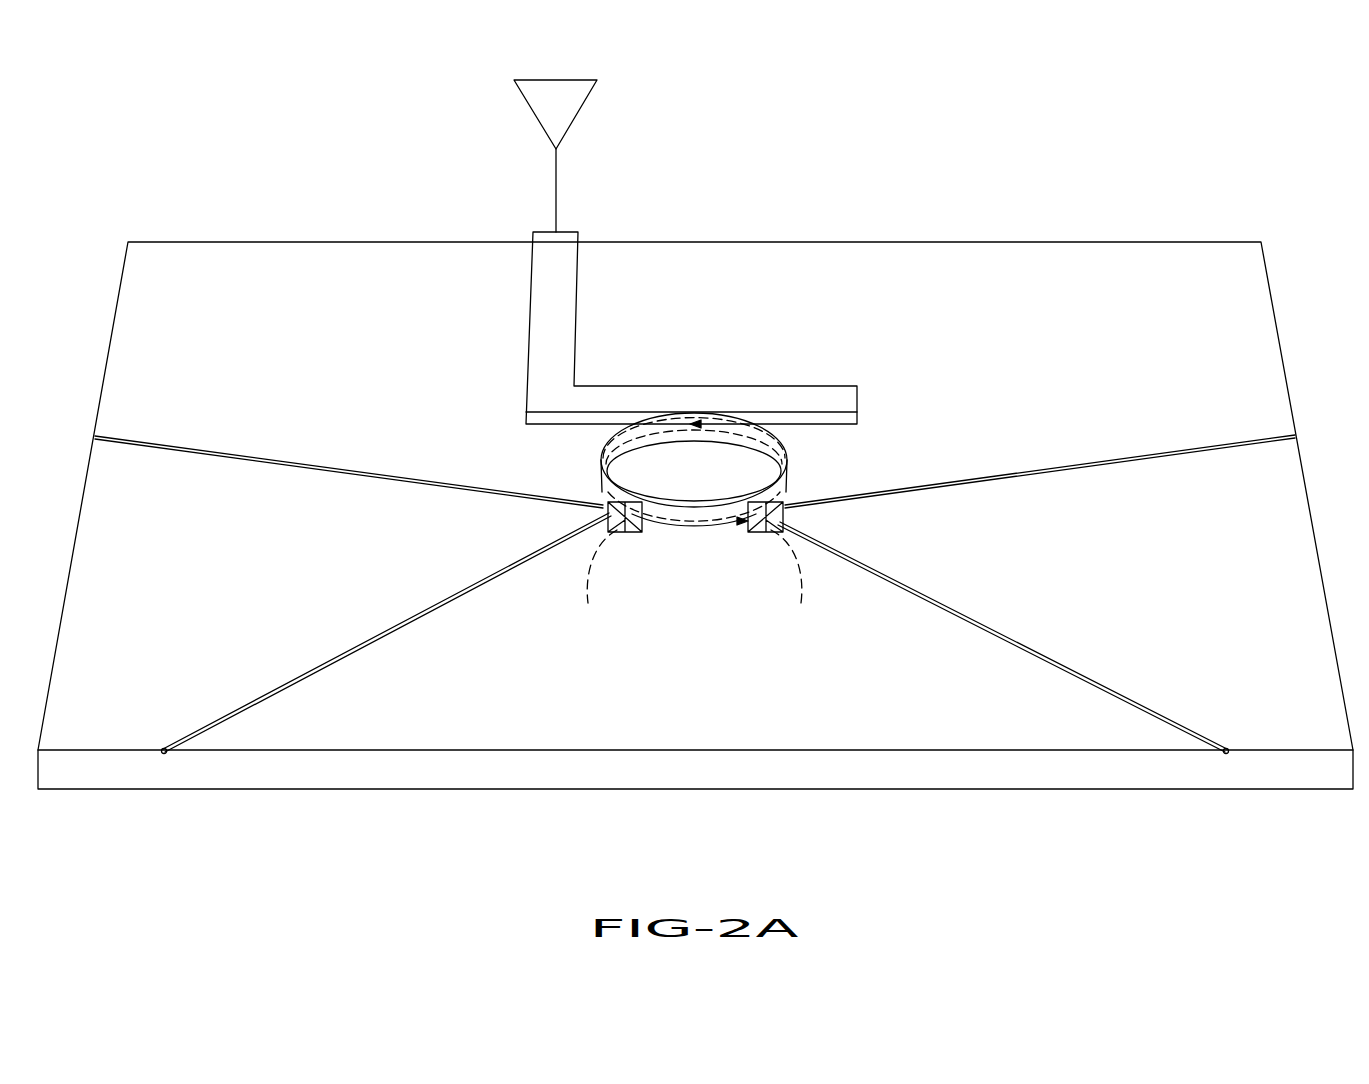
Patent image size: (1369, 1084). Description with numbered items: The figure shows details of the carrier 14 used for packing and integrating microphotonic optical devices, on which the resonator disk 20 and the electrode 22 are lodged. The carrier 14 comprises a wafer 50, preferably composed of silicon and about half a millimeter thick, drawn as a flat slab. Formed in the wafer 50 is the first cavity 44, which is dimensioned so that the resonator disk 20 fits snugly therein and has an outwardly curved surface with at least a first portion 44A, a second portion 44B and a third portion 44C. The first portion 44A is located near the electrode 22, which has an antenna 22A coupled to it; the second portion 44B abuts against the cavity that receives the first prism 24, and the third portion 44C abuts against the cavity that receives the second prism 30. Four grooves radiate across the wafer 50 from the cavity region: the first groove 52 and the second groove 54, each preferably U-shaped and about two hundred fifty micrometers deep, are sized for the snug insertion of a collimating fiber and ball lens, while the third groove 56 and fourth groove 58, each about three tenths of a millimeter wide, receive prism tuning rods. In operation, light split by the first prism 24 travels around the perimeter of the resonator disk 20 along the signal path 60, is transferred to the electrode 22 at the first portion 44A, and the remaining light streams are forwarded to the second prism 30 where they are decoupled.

The carrier 14 is at (259, 181).
The resonator disk 20 is at (658, 470).
The electrode 22 is at (825, 403).
The antenna 22A is at (583, 106).
The first prism 24 is at (596, 582).
The second prism 30 is at (794, 582).
The first cavity 44 is at (803, 472).
The first portion 44A is at (687, 420).
The second portion 44B is at (652, 532).
The third portion 44C is at (745, 532).
The wafer 50 is at (323, 770).
The first groove 52 is at (258, 460).
The second groove 54 is at (1063, 468).
The third groove 56 is at (473, 588).
The fourth groove 58 is at (968, 612).
The signal path 60 is at (733, 433).